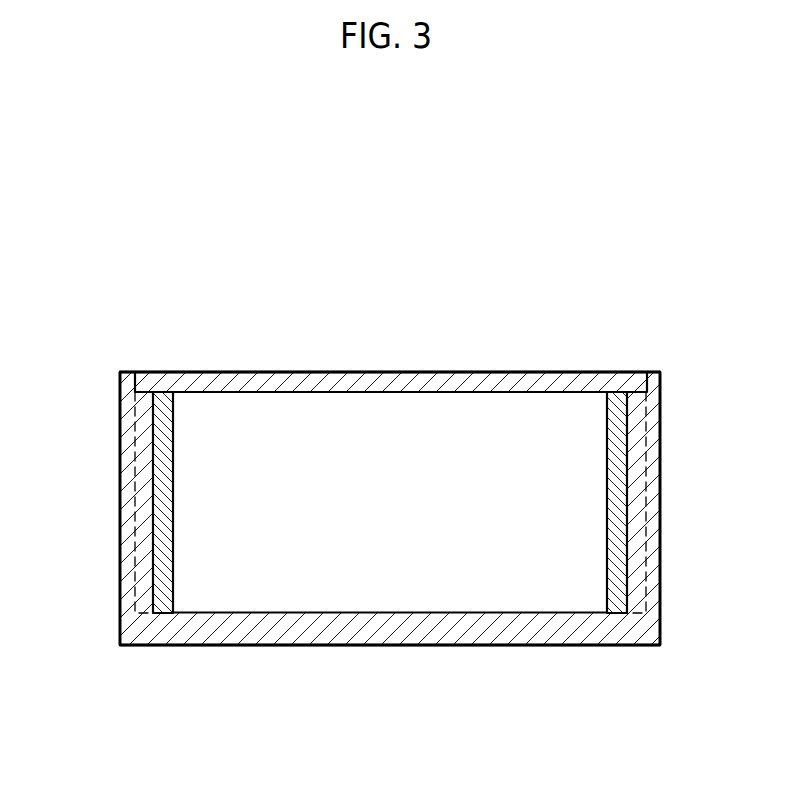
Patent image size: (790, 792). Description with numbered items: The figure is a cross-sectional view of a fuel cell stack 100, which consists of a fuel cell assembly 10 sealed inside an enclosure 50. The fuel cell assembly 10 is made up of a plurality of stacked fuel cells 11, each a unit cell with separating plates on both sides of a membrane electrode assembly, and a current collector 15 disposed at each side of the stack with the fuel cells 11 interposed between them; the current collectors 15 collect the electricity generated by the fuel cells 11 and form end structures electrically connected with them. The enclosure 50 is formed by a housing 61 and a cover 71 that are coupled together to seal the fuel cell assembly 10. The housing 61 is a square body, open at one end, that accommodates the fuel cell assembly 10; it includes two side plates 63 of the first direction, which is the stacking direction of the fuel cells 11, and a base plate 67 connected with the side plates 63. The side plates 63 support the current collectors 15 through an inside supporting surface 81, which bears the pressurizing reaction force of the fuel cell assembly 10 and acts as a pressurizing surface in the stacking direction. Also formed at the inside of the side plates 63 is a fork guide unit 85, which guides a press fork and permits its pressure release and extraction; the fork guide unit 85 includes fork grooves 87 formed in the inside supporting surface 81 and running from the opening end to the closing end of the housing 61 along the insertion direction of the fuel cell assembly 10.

The fuel cell stack 100 is at (402, 239).
The fuel cell assembly 10 is at (355, 393).
The fuel cell 11 is at (435, 398).
The current collector 15 is at (163, 404).
The enclosure 50 is at (48, 352).
The cover 71 is at (134, 384).
The housing 61 is at (120, 430).
The side plates of first direction 63 is at (120, 530).
The base plate 67 is at (484, 646).
The inside supporting surface 81 is at (166, 469).
The fork guide unit 85 is at (135, 609).
The fork groove 87 is at (135, 577).